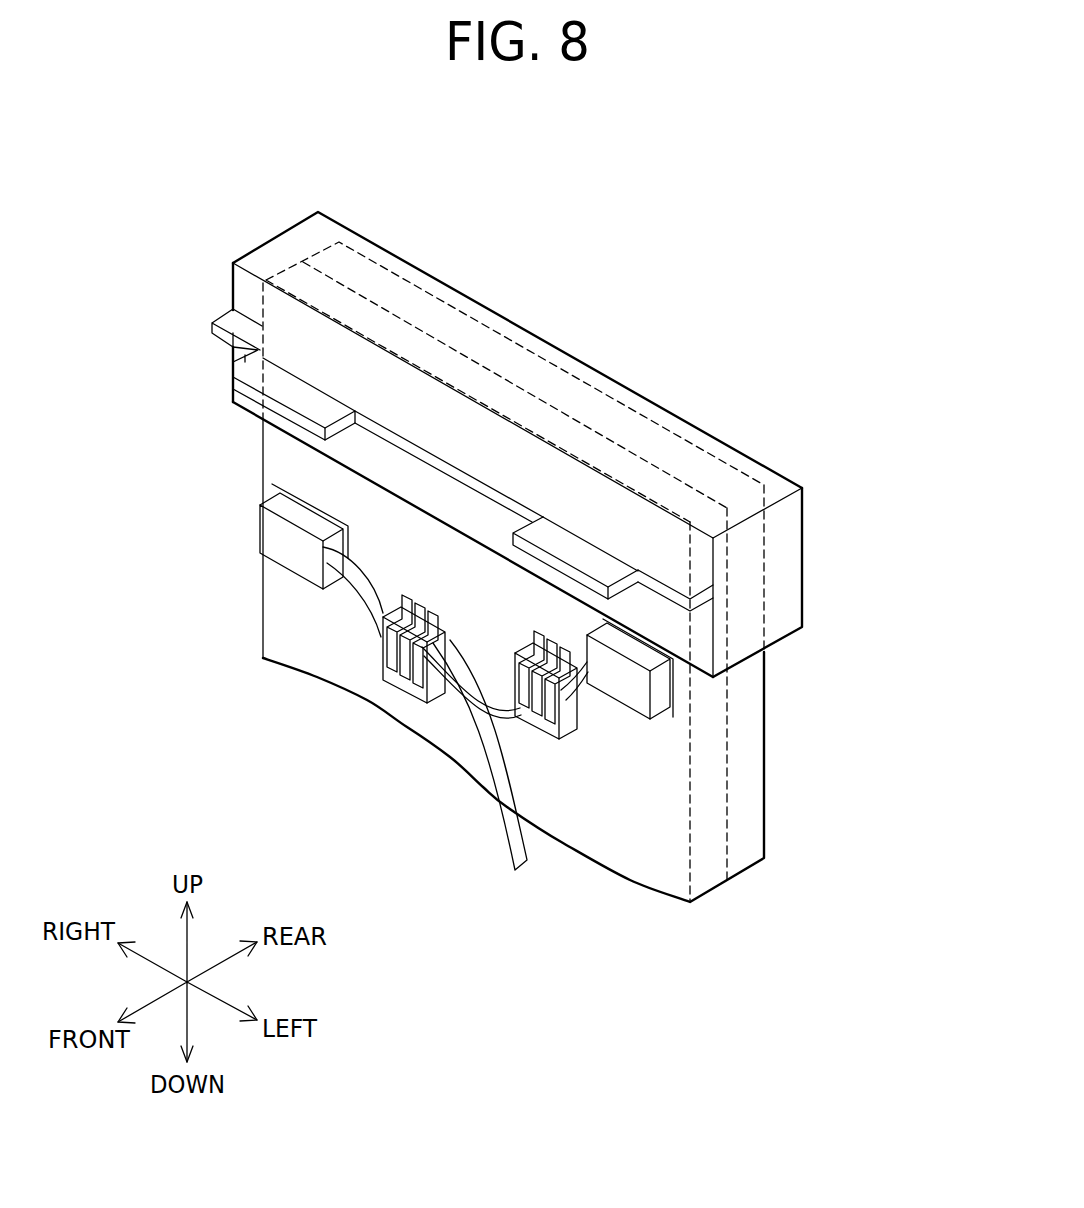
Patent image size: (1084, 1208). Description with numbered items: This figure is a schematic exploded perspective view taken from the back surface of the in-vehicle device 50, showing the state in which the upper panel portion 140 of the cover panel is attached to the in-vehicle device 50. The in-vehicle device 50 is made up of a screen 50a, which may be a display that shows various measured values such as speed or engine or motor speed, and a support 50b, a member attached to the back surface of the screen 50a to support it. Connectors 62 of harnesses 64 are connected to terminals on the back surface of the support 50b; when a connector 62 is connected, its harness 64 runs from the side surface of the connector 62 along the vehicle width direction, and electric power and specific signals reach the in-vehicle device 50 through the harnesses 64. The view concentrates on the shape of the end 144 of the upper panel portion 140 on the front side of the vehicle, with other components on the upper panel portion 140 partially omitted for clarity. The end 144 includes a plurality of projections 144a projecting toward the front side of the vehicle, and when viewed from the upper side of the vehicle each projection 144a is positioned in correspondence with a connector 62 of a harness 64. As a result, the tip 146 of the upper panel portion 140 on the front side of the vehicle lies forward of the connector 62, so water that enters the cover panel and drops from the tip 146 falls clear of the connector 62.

The upper panel portion 140 is at (395, 262).
The end of the upper panel portion on the front side of the vehicle 144 is at (228, 320).
The projection 144a is at (255, 373).
The tip of the upper panel portion on the front side of the vehicle 146 is at (293, 413).
The connector 62 is at (292, 537).
The harness 64 is at (463, 702).
The in-vehicle device 50 is at (614, 592).
The screen 50a is at (747, 723).
The support 50b is at (708, 763).